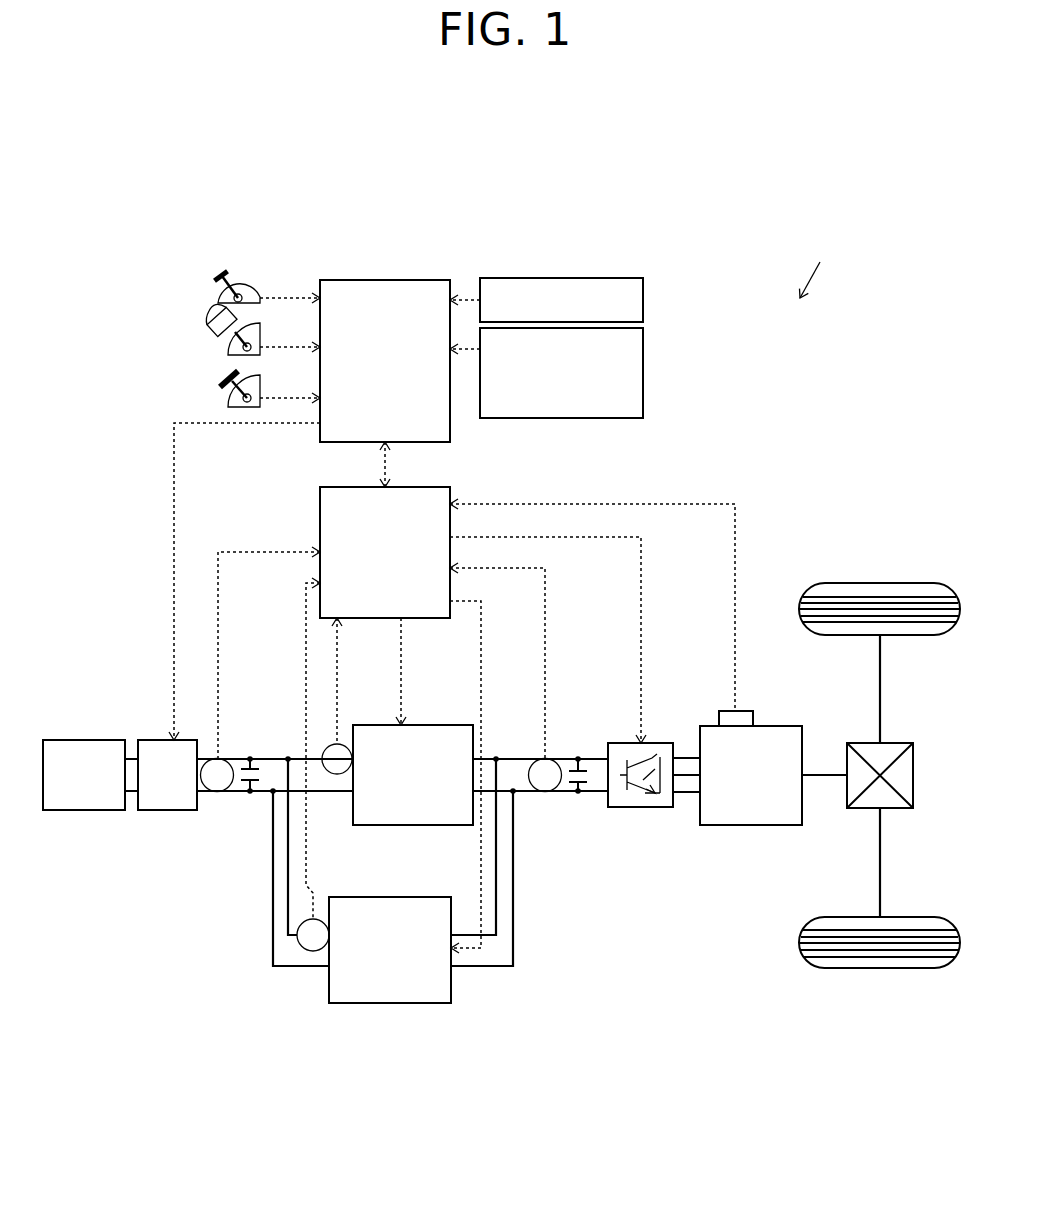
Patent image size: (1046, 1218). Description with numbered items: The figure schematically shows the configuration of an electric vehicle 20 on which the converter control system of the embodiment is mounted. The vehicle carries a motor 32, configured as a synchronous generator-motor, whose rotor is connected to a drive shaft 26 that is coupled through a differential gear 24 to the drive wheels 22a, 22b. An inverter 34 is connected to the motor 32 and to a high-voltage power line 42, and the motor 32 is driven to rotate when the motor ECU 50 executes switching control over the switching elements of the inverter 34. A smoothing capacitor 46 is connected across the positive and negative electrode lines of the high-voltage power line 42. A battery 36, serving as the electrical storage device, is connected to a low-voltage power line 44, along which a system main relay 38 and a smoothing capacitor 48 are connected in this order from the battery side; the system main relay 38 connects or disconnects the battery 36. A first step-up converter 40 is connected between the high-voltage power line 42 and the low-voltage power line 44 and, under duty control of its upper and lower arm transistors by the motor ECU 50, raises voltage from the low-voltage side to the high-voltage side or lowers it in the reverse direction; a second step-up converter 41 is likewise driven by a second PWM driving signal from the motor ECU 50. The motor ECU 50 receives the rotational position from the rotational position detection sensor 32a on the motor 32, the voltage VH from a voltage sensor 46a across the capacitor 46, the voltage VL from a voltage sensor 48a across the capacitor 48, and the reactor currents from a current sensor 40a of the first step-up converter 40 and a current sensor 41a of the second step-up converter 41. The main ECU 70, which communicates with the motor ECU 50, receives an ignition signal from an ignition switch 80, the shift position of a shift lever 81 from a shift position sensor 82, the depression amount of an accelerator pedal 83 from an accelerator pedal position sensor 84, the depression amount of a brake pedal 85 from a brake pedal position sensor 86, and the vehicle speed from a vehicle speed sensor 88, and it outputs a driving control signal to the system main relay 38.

The electric vehicle 20 is at (817, 265).
The drive wheel 22a is at (880, 583).
The drive wheel 22b is at (880, 968).
The differential gear 24 is at (894, 743).
The drive shaft 26 is at (815, 773).
The motor 32 is at (767, 726).
The rotational position detection sensor 32a is at (727, 711).
The inverter 34 is at (656, 743).
The battery 36 is at (92, 810).
The system main relay 38 is at (172, 810).
The first step-up converter 40 is at (378, 725).
The current sensor 40a is at (337, 775).
The second step-up converter 41 is at (432, 897).
The current sensor 41a is at (310, 951).
The high-voltage power line 42 is at (585, 759).
The low-voltage power line 44 is at (256, 758).
The smoothing capacitor 46 is at (583, 786).
The voltage sensor 46a is at (545, 792).
The smoothing capacitor 48 is at (250, 786).
The voltage sensor 48a is at (217, 792).
The motor ECU 50 is at (320, 504).
The main ECU 70 is at (387, 280).
The ignition switch 80 is at (643, 300).
The shift lever 81 is at (212, 279).
The shift position sensor 82 is at (225, 301).
The accelerator pedal 83 is at (208, 326).
The accelerator pedal position sensor 84 is at (228, 350).
The brake pedal 85 is at (215, 384).
The brake pedal position sensor 86 is at (226, 400).
The vehicle speed sensor 88 is at (643, 349).